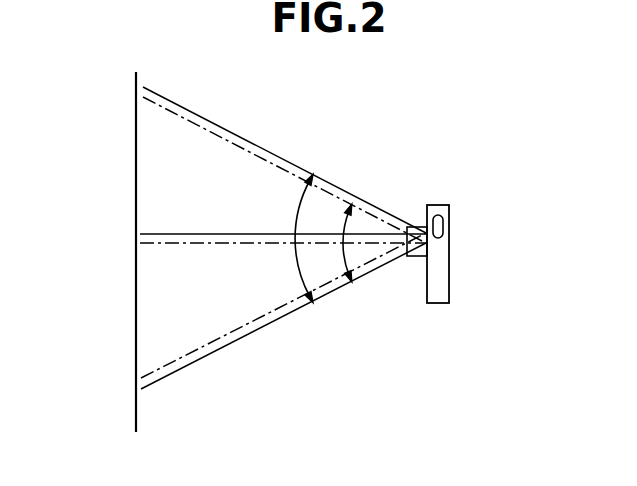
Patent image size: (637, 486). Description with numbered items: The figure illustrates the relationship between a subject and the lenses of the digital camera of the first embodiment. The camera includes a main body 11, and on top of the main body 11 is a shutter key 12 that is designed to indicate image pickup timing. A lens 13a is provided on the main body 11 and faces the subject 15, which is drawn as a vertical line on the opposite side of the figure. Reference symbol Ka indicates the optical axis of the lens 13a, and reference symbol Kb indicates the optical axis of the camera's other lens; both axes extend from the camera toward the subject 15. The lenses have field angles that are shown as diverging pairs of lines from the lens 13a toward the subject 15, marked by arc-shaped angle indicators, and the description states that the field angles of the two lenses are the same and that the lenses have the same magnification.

The main body 11 is at (438, 277).
The shutter key 12 is at (440, 220).
The lens 13a is at (412, 226).
The subject 15 is at (136, 168).
The optical axis Ka is at (170, 233).
The optical axis Kb is at (180, 244).